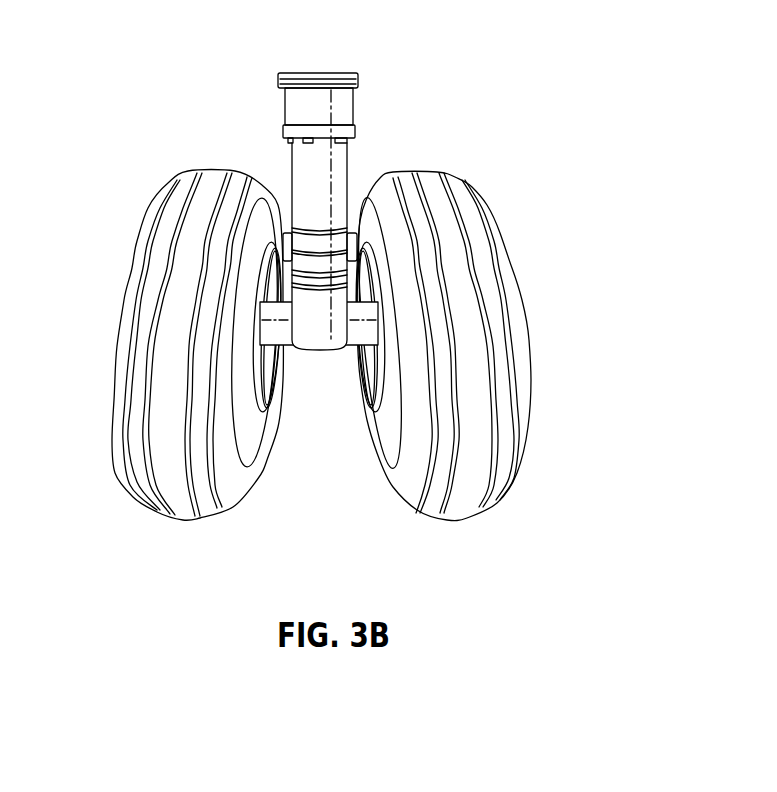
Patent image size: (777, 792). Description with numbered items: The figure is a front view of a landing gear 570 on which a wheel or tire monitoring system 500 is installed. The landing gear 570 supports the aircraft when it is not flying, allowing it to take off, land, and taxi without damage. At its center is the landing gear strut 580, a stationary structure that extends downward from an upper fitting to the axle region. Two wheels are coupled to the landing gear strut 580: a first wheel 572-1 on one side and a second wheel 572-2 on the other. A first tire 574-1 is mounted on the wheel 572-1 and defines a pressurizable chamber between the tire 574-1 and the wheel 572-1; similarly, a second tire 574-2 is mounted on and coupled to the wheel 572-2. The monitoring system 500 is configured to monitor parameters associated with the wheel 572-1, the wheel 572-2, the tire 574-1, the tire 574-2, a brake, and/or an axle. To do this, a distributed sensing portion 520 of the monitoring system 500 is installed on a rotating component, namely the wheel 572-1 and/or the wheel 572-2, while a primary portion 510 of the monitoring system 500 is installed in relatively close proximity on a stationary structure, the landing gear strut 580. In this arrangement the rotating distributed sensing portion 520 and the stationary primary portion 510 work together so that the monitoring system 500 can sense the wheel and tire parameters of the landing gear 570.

The monitoring system 500 is at (588, 78).
The primary portion 510 is at (353, 263).
The distributed sensing portion 520 is at (373, 292).
The landing gear 570 is at (82, 226).
The wheel 572-1 is at (360, 270).
The wheel 572-2 is at (263, 403).
The tire 574-1 is at (475, 472).
The tire 574-2 is at (162, 472).
The landing gear strut 580 is at (340, 163).